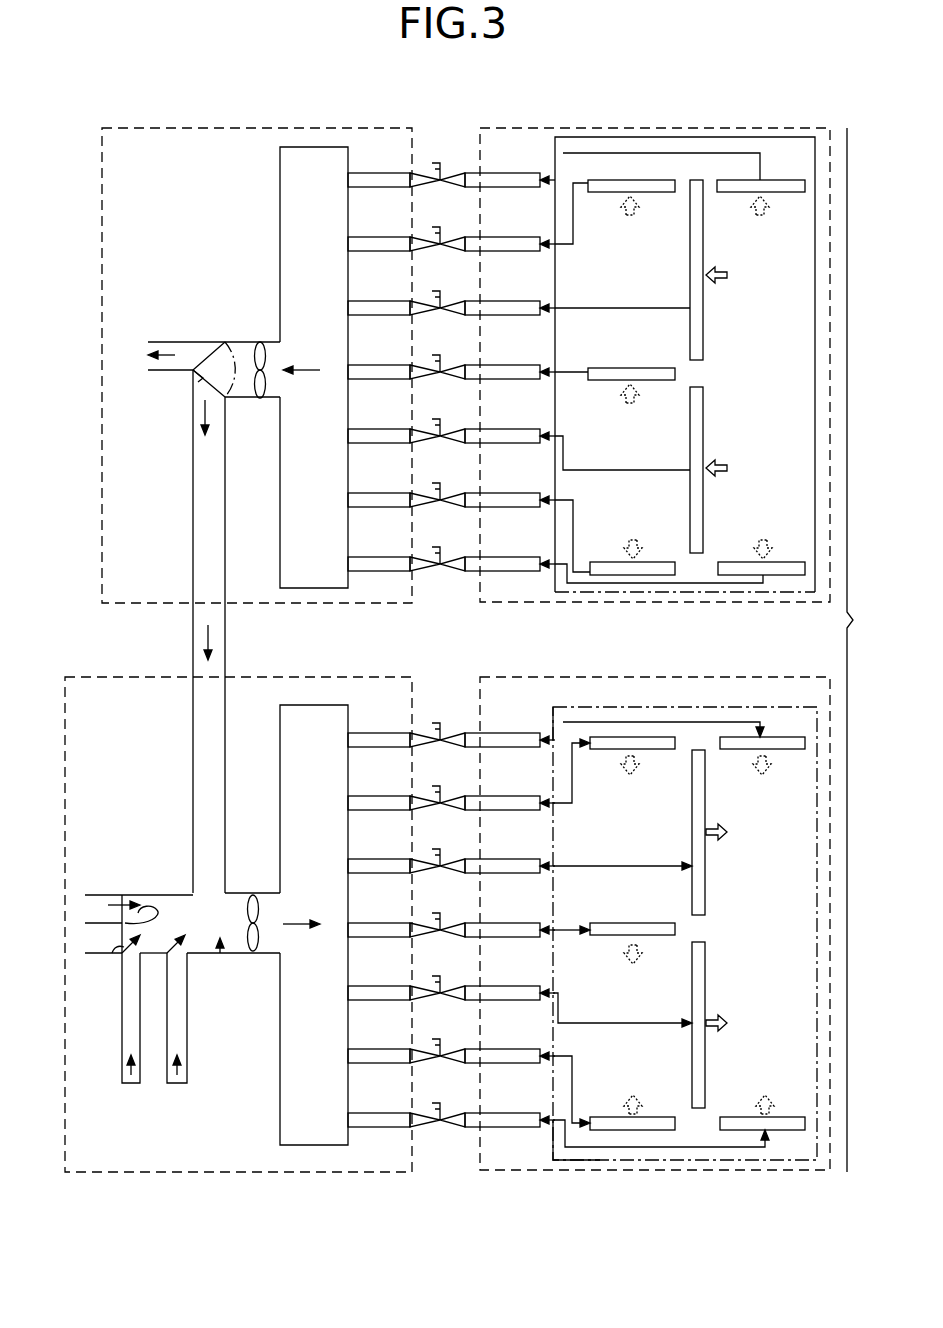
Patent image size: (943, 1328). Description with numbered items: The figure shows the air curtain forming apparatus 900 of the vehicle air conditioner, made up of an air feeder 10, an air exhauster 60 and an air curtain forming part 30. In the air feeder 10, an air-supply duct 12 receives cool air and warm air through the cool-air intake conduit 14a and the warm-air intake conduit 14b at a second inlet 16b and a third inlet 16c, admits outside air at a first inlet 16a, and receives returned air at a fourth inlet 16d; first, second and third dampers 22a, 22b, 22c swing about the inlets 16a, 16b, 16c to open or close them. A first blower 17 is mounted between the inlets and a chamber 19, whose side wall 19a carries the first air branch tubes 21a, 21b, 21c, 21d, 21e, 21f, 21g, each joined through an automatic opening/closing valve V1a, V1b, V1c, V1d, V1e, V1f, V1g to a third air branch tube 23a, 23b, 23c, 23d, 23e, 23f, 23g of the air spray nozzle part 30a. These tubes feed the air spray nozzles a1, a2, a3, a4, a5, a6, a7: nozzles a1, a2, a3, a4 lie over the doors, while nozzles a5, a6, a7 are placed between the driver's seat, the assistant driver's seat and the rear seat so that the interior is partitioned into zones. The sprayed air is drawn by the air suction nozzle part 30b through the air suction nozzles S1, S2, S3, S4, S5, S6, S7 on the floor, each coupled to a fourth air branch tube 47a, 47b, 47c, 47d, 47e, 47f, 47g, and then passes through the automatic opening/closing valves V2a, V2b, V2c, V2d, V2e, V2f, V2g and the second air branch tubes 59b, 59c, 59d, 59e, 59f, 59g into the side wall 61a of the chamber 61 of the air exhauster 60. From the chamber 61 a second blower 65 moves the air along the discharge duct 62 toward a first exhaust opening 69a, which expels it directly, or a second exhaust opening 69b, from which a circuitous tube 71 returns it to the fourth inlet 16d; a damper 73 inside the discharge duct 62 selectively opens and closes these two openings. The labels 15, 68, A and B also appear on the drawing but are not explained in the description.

The air curtain forming apparatus 900 is at (106, 106).
The air exhauster 60 is at (200, 128).
The chamber 61 is at (285, 178).
The side wall 61a is at (348, 430).
The discharge duct 62 is at (277, 480).
The second blower 65 is at (261, 342).
The damper 68 is at (195, 342).
The first exhaust opening 69a is at (170, 342).
The second exhaust opening 69b is at (193, 415).
The circuitous tube 71 is at (193, 508).
The damper 73 is at (193, 375).
The second air branch tube 59b is at (374, 173).
The second air branch tube 59c is at (374, 301).
The second air branch tube 59d is at (374, 365).
The second air branch tube 59e is at (374, 429).
The second air branch tube 59f is at (374, 493).
The second air branch tube 59g is at (374, 557).
The automatic opening/closing valve V2a is at (439, 162).
The automatic opening/closing valve V2b is at (440, 226).
The automatic opening/closing valve V2c is at (439, 290).
The automatic opening/closing valve V2d is at (440, 354).
The automatic opening/closing valve V2e is at (439, 418).
The automatic opening/closing valve V2f is at (437, 482).
The automatic opening/closing valve V2g is at (440, 546).
The fourth air branch tube 47a is at (494, 173).
The fourth air branch tube 47b is at (494, 237).
The fourth air branch tube 47c is at (494, 301).
The fourth air branch tube 47d is at (494, 365).
The fourth air branch tube 47e is at (494, 429).
The fourth air branch tube 47f is at (494, 493).
The fourth air branch tube 47g is at (494, 557).
The air curtain forming part 30 is at (683, 1192).
The air spray nozzle part 30a is at (708, 677).
The air suction nozzle part 30b is at (708, 128).
The air suction nozzle S1 is at (616, 191).
The air suction nozzle S2 is at (747, 191).
The air suction nozzle S3 is at (615, 560).
The air suction nozzle S4 is at (797, 560).
The air suction nozzle S5 is at (609, 368).
The air suction nozzle S6 is at (703, 325).
The air suction nozzle S7 is at (703, 425).
The air feeder 10 is at (100, 677).
The air-supply duct 12 is at (265, 953).
The cool-air intake conduit 14a is at (125, 1042).
The warm-air intake conduit 14b is at (183, 1058).
The chamber 15 is at (220, 955).
The first inlet 16a is at (95, 895).
The second inlet 16b is at (128, 965).
The third inlet 16c is at (180, 975).
The fourth inlet 16d is at (228, 918).
The first blower 17 is at (255, 893).
The chamber 19 is at (320, 1145).
The side wall 19a is at (348, 977).
The first damper 22a is at (155, 912).
The second damper 22b is at (122, 953).
The third damper 22c is at (165, 935).
The first air branch tube 21a is at (374, 733).
The first air branch tube 21b is at (374, 796).
The first air branch tube 21c is at (374, 859).
The first air branch tube 21d is at (374, 923).
The first air branch tube 21e is at (374, 986).
The first air branch tube 21f is at (374, 1049).
The first air branch tube 21g is at (374, 1113).
The automatic opening/closing valve V1a is at (439, 722).
The automatic opening/closing valve V1b is at (440, 785).
The automatic opening/closing valve V1c is at (439, 848).
The automatic opening/closing valve V1d is at (440, 912).
The automatic opening/closing valve V1e is at (439, 975).
The automatic opening/closing valve V1f is at (437, 1038).
The automatic opening/closing valve V1g is at (440, 1102).
The third air branch tube 23a is at (494, 733).
The third air branch tube 23b is at (494, 796).
The third air branch tube 23c is at (494, 859).
The third air branch tube 23d is at (494, 923).
The third air branch tube 23e is at (494, 986).
The third air branch tube 23f is at (494, 1049).
The third air branch tube 23g is at (494, 1113).
The air spray nozzle a1 is at (601, 752).
The air spray nozzle a2 is at (741, 752).
The air spray nozzle a3 is at (608, 1115).
The air spray nozzle a4 is at (797, 1115).
The air spray nozzle a5 is at (601, 937).
The air spray nozzle a6 is at (707, 880).
The air spray nozzle a7 is at (707, 980).
The air source A is at (128, 1085).
The air source B is at (187, 1085).